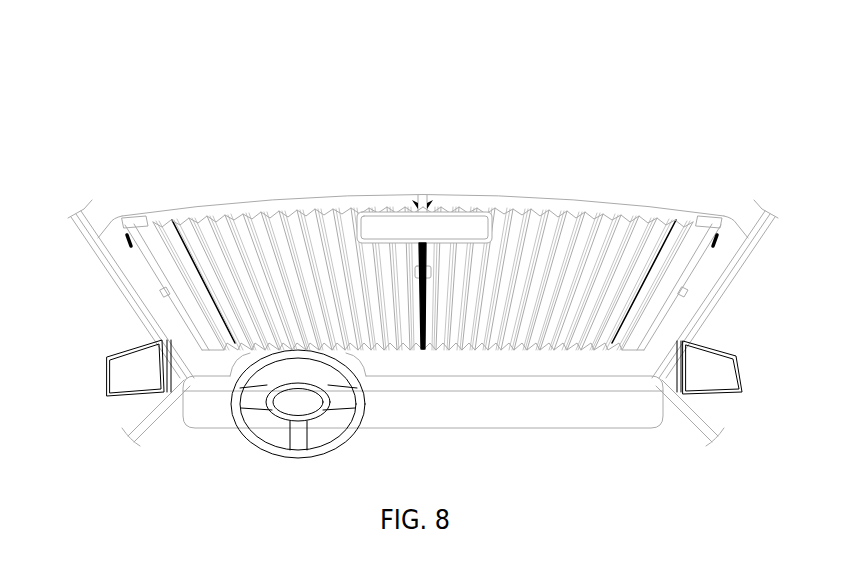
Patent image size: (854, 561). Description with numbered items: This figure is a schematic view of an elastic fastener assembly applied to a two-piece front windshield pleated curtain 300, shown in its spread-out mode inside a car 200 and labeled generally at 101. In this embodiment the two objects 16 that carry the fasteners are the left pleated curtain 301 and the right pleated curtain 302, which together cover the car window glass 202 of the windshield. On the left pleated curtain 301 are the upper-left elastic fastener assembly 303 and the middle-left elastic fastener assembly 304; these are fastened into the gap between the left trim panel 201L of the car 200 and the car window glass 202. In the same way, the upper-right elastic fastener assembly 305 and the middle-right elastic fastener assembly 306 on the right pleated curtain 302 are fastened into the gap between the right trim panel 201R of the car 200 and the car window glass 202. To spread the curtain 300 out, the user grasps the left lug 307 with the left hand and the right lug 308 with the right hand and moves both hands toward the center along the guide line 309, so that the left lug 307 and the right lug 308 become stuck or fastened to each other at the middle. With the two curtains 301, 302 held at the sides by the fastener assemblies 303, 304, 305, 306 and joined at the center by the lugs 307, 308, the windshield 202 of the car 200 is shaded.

The vehicle sun shade system 101 is at (195, 74).
The two-piece front windshield pleated curtain 300 is at (168, 123).
The object 16 is at (127, 220).
The car 200 is at (713, 138).
The left trim panel 201L is at (142, 270).
The right trim panel 201R is at (705, 270).
The car window glass 202 is at (318, 198).
The left pleated curtain 301 is at (272, 178).
The right pleated curtain 302 is at (577, 175).
The upper-left elastic fastener assembly 303 is at (95, 251).
The middle-left elastic fastener assembly 304 is at (132, 306).
The upper-right elastic fastener assembly 305 is at (753, 243).
The middle-right elastic fastener assembly 306 is at (715, 302).
The left lug 307 is at (418, 268).
The right lug 308 is at (430, 270).
The guide line 309 is at (533, 210).